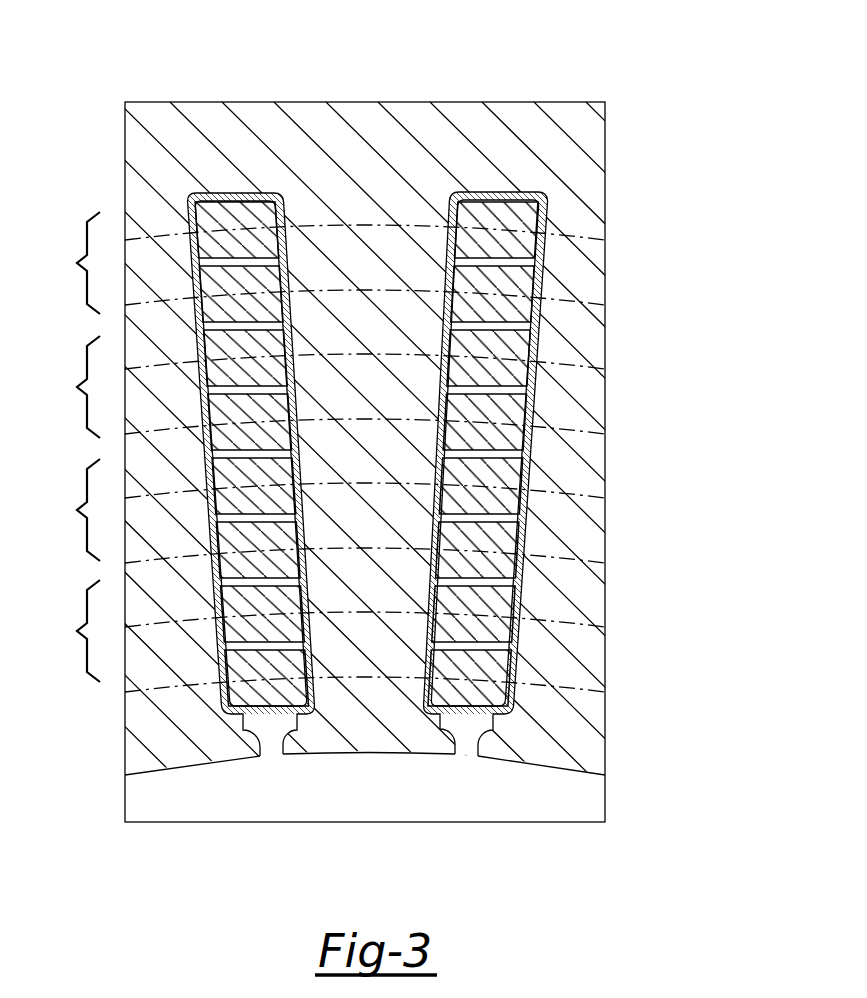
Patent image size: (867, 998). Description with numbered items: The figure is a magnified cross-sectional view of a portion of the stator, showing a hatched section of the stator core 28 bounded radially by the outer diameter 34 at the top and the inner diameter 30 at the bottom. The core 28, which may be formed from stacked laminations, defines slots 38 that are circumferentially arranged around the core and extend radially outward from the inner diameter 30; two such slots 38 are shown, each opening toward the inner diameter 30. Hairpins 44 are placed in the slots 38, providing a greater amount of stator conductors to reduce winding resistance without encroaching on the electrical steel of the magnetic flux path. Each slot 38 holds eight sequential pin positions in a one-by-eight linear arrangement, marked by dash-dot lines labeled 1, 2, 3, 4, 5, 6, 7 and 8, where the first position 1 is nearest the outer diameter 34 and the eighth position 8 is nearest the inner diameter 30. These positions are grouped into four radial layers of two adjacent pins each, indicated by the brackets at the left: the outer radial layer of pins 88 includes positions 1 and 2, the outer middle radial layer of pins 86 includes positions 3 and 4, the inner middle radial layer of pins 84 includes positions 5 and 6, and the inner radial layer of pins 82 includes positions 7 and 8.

The stator core 28 is at (372, 130).
The inner diameter 30 is at (380, 756).
The outer diameter 34 is at (606, 66).
The slot 38 is at (497, 778).
The hairpin 44 is at (528, 212).
The inner radial layer of pins 82 is at (72, 631).
The inner middle radial layer of pins 84 is at (72, 510).
The outer middle radial layer of pins 86 is at (72, 387).
The outer radial layer of pins 88 is at (72, 263).
The first pin position 1 is at (365, 226).
The second pin position 2 is at (365, 291).
The third pin position 3 is at (365, 355).
The fourth pin position 4 is at (365, 420).
The fifth pin position 5 is at (365, 484).
The sixth pin position 6 is at (365, 549).
The seventh pin position 7 is at (365, 613).
The eighth pin position 8 is at (365, 678).